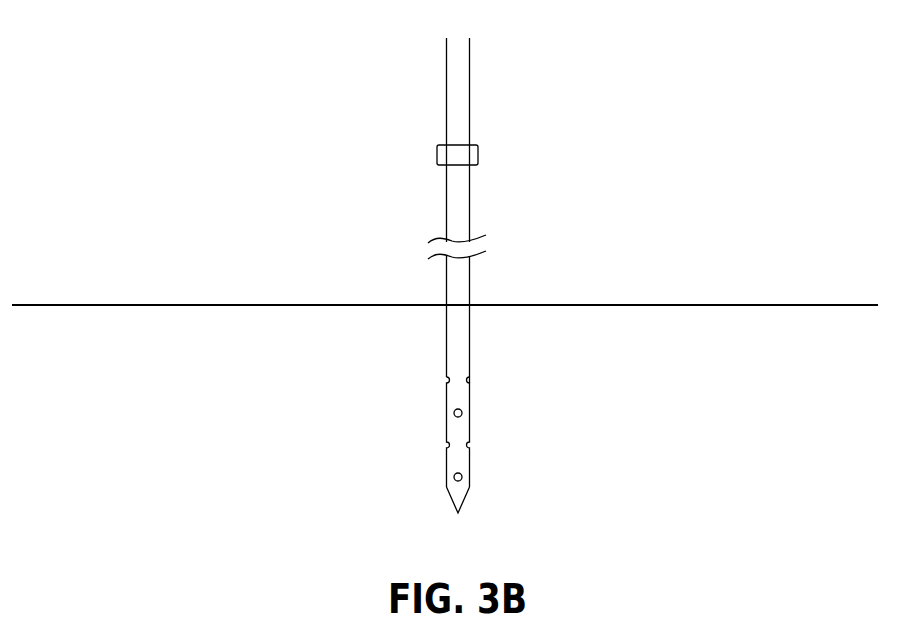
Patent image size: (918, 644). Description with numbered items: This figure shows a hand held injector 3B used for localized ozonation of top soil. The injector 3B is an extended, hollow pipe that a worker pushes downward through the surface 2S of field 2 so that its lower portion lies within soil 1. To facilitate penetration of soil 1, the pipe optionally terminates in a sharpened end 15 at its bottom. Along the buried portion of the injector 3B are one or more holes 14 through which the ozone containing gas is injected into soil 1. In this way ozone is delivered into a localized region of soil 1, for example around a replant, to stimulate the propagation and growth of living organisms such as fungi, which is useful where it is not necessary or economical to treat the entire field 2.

The soil 1 is at (233, 369).
The field 2 is at (183, 184).
The surface 2S is at (647, 303).
The hand held injector 3B is at (493, 188).
The holes 14 is at (462, 413).
The sharpened end 15 is at (466, 497).